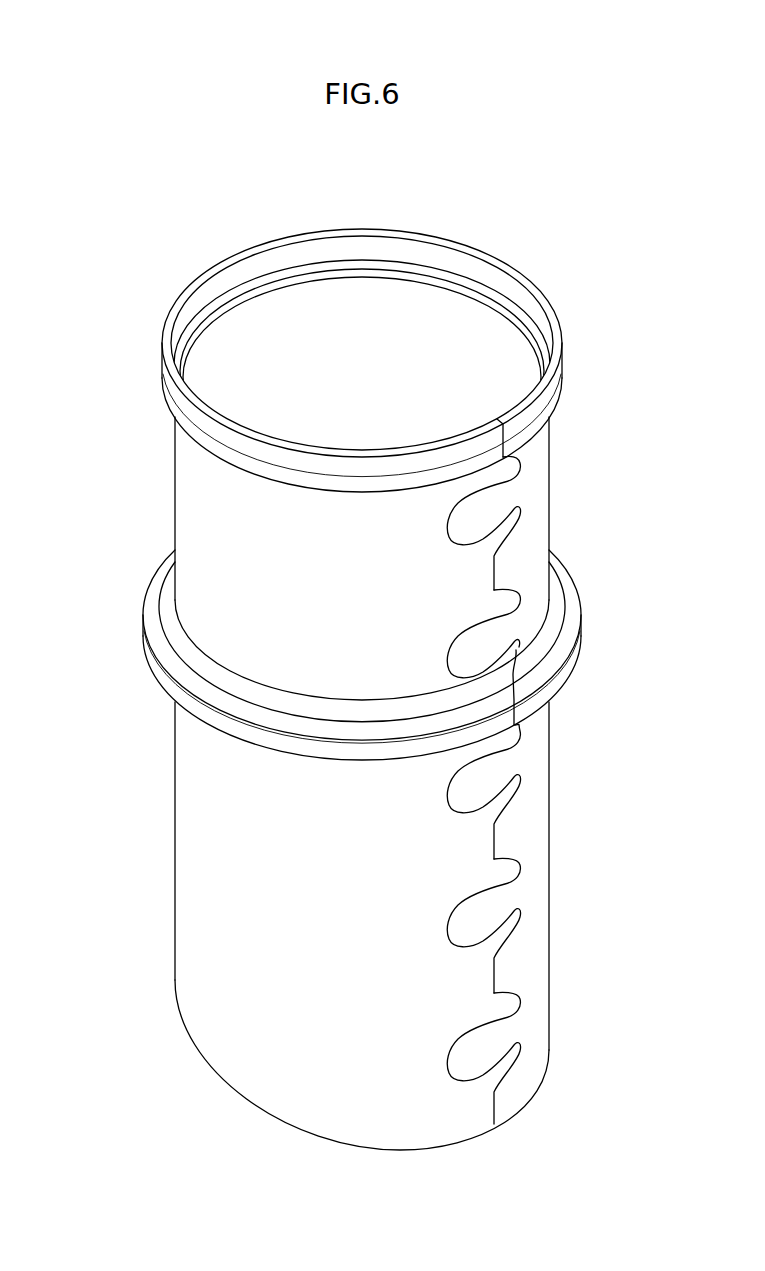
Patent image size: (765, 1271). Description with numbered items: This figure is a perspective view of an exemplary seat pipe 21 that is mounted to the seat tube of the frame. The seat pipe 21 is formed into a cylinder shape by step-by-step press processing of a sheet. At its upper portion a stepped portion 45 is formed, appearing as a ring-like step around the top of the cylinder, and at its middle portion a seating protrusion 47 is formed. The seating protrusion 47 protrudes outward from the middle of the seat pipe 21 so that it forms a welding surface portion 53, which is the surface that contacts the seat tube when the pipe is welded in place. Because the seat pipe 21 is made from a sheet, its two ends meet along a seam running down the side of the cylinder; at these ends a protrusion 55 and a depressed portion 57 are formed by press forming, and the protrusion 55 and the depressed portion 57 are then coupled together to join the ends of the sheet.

The seat pipe 21 is at (202, 514).
The stepped portion 45 is at (198, 272).
The seating protrusion 47 is at (137, 643).
The welding surface portion 53 is at (168, 686).
The protrusion 55 is at (463, 517).
The depressed portion 57 is at (514, 493).